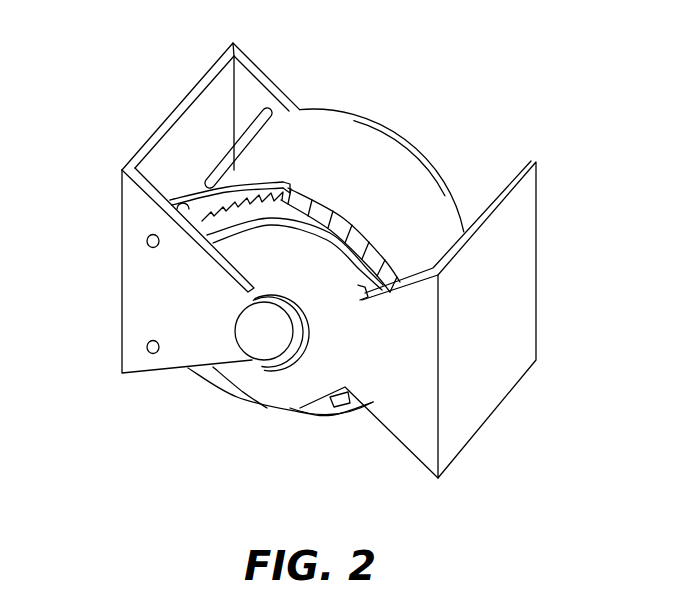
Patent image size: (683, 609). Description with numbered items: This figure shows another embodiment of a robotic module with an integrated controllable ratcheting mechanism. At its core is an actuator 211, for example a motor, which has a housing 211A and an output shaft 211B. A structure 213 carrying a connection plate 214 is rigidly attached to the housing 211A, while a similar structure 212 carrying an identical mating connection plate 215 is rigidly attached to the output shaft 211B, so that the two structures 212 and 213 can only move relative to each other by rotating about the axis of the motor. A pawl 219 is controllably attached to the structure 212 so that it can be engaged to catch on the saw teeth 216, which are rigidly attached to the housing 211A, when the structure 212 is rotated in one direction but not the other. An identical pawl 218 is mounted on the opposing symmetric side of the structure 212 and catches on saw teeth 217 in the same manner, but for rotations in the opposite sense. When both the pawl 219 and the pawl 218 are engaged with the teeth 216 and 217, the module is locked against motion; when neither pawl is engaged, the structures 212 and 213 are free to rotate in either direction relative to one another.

The actuator 211 is at (360, 140).
The housing 211A is at (428, 145).
The output shaft 211B is at (277, 335).
The structure 212 is at (140, 295).
The structure 213 is at (425, 437).
The connection plate 214 is at (523, 273).
The mating connection plate 215 is at (218, 102).
The saw teeth 216 is at (315, 213).
The saw teeth 217 is at (343, 402).
The pawl 218 is at (207, 372).
The pawl 219 is at (213, 197).